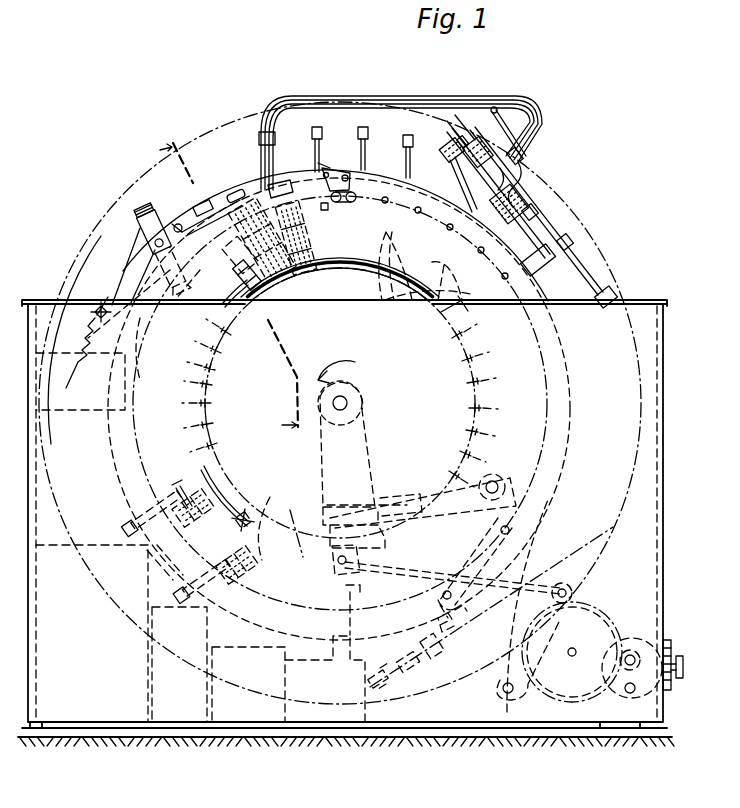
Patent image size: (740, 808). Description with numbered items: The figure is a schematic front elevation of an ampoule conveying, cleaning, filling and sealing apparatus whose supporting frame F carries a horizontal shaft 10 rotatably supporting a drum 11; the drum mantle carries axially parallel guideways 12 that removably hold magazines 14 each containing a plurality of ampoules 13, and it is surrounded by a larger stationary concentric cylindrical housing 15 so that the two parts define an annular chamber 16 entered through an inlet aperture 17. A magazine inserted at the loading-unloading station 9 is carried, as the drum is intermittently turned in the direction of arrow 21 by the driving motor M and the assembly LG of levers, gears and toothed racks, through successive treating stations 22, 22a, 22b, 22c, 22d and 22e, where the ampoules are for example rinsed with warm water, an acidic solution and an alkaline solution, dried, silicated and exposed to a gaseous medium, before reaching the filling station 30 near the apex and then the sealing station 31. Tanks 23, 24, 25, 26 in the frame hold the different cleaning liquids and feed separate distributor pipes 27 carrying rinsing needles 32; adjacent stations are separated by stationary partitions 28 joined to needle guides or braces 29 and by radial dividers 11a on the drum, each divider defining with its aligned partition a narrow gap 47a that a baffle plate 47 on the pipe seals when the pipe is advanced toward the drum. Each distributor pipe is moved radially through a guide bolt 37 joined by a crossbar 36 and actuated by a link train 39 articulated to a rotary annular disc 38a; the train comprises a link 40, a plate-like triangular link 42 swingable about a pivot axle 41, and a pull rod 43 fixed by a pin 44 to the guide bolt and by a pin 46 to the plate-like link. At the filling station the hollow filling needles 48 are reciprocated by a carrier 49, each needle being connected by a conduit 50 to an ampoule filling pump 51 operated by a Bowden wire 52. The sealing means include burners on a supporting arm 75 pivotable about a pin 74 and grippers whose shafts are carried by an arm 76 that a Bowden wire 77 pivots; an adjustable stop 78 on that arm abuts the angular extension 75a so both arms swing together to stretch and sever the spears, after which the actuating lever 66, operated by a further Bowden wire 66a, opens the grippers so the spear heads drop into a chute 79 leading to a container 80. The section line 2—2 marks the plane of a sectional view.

The supporting frame F is at (658, 537).
The driving motor M is at (648, 660).
The assembly of levers, gears and toothed racks LG is at (412, 568).
The section line 2 is at (220, 289).
The loading-unloading station 9 is at (263, 286).
The horizontal shaft 10 is at (347, 401).
The drum 11 is at (480, 382).
The dividers 11a is at (445, 290).
The guideways 12 is at (387, 236).
The ampoules 13 is at (240, 288).
The magazines 14 is at (236, 266).
The cylindrical housing 15 is at (562, 338).
The annular chamber 16 is at (466, 326).
The inlet aperture 17 is at (238, 278).
The arrow 21 is at (344, 367).
The treating station 22 is at (232, 326).
The treating station 22a is at (216, 350).
The treating station 22b is at (210, 368).
The treating station 22c is at (206, 384).
The treating station 22d is at (205, 403).
The treating station 22e is at (207, 424).
The tank 23 is at (103, 694).
The tank 24 is at (191, 701).
The tank 25 is at (251, 712).
The tank 26 is at (331, 694).
The distributor pipe 27 is at (214, 571).
The partitions 28 is at (232, 598).
The needle guides 29 is at (240, 522).
The filling station 30 is at (322, 276).
The sealing station 31 is at (299, 282).
The rinsing needles 32 is at (178, 500).
The crossbar 36 is at (369, 130).
The guide bolt 37 is at (319, 166).
The rotary annular disc 38a is at (530, 258).
The link train 39 is at (355, 196).
The link 40 is at (388, 204).
The pivot axle 41 is at (404, 172).
The plate-like triangular link 42 is at (346, 170).
The pull rod 43 is at (320, 170).
The pin 44 is at (330, 208).
The pin 46 is at (322, 162).
The baffle plate 47 is at (252, 580).
The gap 47a is at (268, 504).
The filling needles 48 is at (290, 210).
The carrier 49 is at (273, 178).
The conduit 50 is at (290, 95).
The ampoule filling pump 51 is at (522, 196).
The Bowden wire 52 is at (642, 372).
The actuating lever 66 is at (232, 208).
The Bowden wire 66a is at (85, 272).
The pin 74 is at (150, 322).
The supporting arm 75 is at (172, 278).
The angular extension 75a is at (143, 222).
The arm 76 is at (214, 204).
The Bowden wire 77 is at (63, 372).
The adjustable stop 78 is at (178, 224).
The chute 79 is at (146, 334).
The container 80 is at (124, 380).